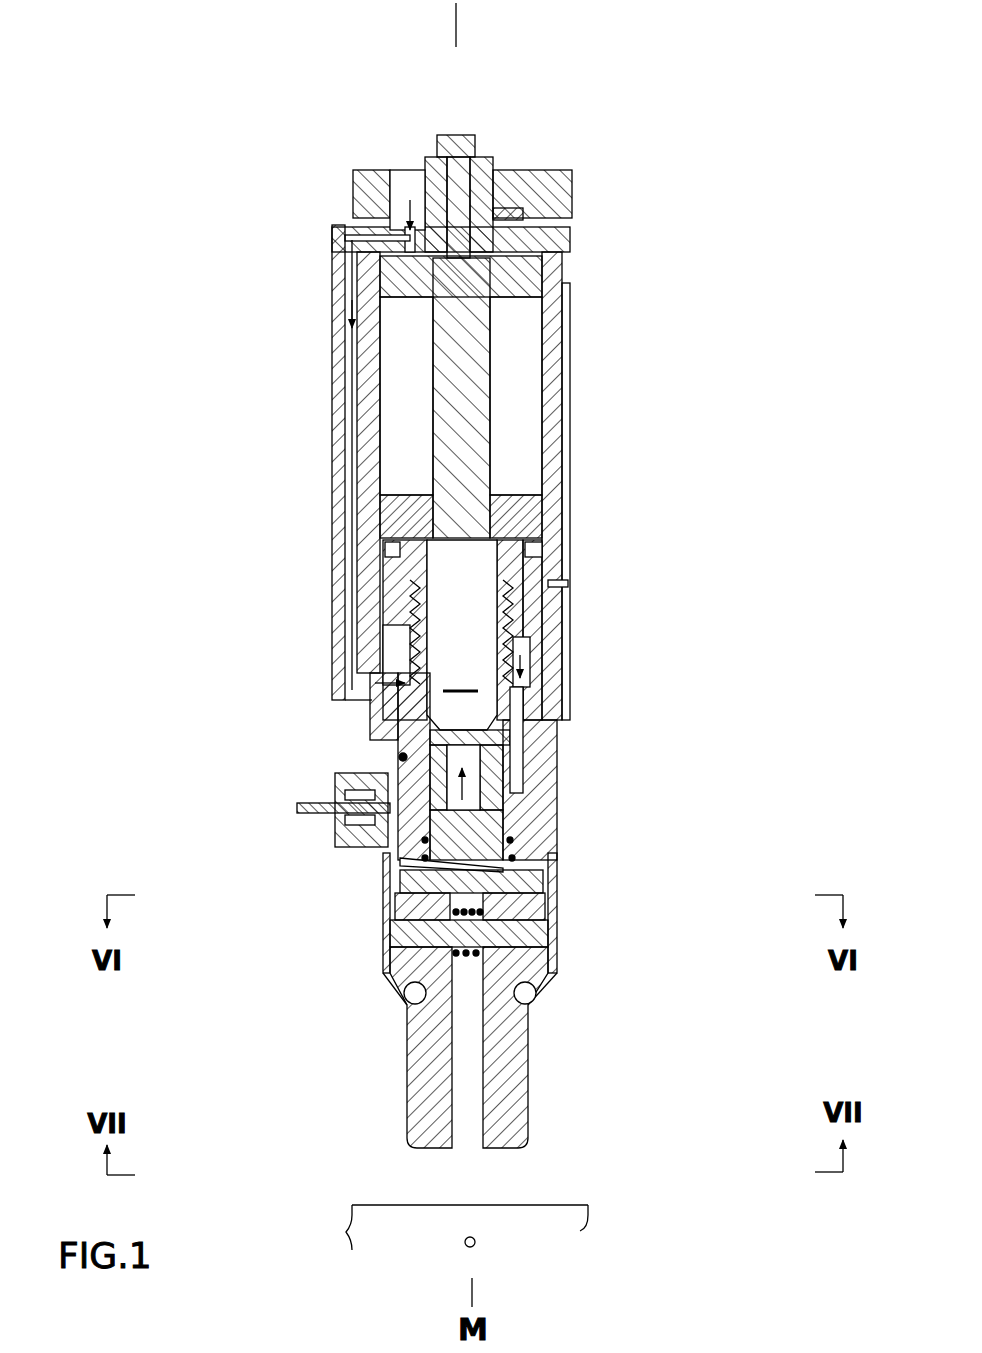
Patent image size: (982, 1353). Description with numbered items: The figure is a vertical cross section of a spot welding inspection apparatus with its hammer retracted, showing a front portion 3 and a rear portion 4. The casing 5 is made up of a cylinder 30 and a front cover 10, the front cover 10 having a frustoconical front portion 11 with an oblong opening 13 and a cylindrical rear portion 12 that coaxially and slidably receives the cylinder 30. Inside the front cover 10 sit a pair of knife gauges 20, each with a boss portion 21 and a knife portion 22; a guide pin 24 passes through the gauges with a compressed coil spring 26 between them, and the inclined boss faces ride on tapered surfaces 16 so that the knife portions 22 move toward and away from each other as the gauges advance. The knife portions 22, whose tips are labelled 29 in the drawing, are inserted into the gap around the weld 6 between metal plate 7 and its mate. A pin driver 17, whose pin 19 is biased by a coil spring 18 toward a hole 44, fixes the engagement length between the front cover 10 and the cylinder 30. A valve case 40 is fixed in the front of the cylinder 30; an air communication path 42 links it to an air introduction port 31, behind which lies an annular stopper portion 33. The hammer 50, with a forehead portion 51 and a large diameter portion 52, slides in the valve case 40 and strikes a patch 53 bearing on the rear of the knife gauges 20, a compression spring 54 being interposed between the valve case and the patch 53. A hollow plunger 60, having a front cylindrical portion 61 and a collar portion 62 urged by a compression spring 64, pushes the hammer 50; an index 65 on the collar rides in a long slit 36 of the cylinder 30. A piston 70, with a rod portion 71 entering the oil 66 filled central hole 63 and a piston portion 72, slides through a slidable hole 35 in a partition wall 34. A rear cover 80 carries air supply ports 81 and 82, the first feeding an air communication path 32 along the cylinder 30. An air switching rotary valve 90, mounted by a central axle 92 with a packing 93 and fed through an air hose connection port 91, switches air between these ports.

The front portion of the apparatus 3 is at (342, 1243).
The rear portion of the apparatus 4 is at (323, 88).
The casing 5 is at (650, 750).
The weld 6 is at (465, 1245).
The metal plate 7 is at (588, 1230).
The front cover 10 is at (557, 797).
The frustoconical front portion 11 is at (390, 987).
The cylindrical rear portion 12 is at (380, 955).
The oblong opening 13 is at (485, 1053).
The tapered surfaces 16 is at (410, 1017).
The pin driver 17 is at (200, 783).
The coil spring 18 is at (335, 838).
The pin 19 is at (300, 814).
The knife gauge 20 is at (303, 1090).
The boss portion 21 is at (382, 908).
The knife portion 22 is at (430, 1093).
The guide pin 24 is at (557, 930).
The coil spring 26 is at (553, 1020).
The contact tips 29 is at (452, 1135).
The cylinder 30 is at (553, 742).
The air introduction port 31 is at (335, 697).
The air communication path 32 is at (343, 357).
The annular stopper portion 33 is at (567, 645).
The partition wall 34 is at (540, 517).
The slidable hole 35 is at (479, 500).
The long slit 36 is at (567, 588).
The valve case 40 is at (392, 722).
The air communication path 42 is at (552, 716).
The hole 44 is at (395, 752).
The hammer 50 is at (638, 833).
The forehead portion 51 is at (555, 830).
The large diameter portion 52 is at (555, 815).
The patch 53 is at (555, 860).
The compression spring 54 is at (410, 860).
The hollow plunger 60 is at (183, 560).
The front cylindrical portion 61 is at (333, 622).
The collar portion 62 is at (333, 582).
The central hole 63 is at (462, 635).
The compression spring 64 is at (567, 637).
The index 65 is at (567, 585).
The oil 66 is at (465, 670).
The piston 70 is at (640, 327).
The rod portion 71 is at (480, 387).
The piston portion 72 is at (520, 283).
The rear cover 80 is at (577, 246).
The air supply port 81 is at (333, 242).
The air supply port 82 is at (505, 235).
The air switching rotary valve 90 is at (572, 196).
The air hose connection port 91 is at (408, 178).
The central axle 92 is at (470, 133).
The packing 93 is at (545, 173).